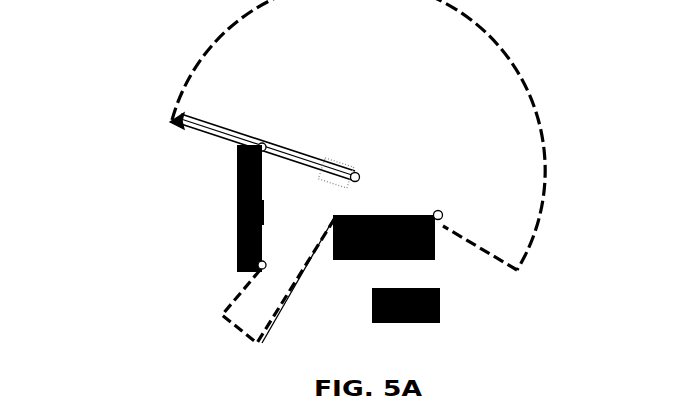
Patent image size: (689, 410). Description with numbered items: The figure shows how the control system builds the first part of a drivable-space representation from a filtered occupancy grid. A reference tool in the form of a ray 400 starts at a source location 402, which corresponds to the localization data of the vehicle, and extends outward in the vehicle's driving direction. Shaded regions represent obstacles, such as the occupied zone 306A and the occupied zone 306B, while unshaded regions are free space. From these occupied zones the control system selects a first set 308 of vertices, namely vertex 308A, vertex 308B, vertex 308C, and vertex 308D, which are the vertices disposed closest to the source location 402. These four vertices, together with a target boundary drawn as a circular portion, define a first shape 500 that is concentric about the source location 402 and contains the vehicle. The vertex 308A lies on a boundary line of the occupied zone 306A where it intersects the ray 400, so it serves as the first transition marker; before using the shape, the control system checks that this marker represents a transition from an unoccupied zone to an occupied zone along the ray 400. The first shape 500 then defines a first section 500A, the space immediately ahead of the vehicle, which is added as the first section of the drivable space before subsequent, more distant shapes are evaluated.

The first shape 500 is at (541, 163).
The first section 500A is at (462, 100).
The ray 400 is at (310, 157).
The source location 402 is at (360, 177).
The first set 308 is at (70, 171).
The vertex 308A is at (237, 150).
The vertex 308B is at (237, 254).
The vertex 308C is at (258, 343).
The vertex 308D is at (440, 220).
The occupied zone 306A is at (263, 212).
The occupied zone 306B is at (395, 213).